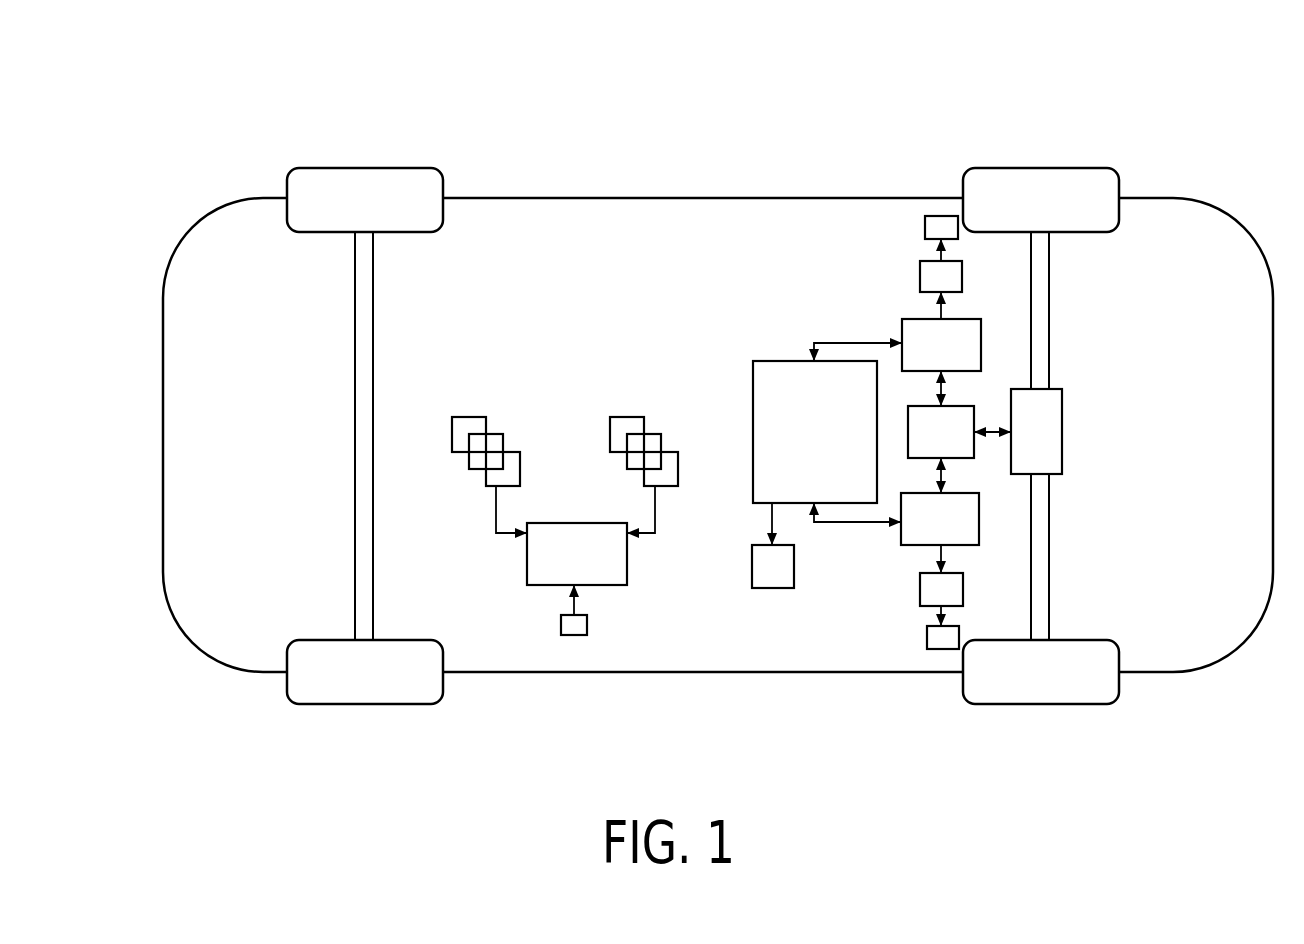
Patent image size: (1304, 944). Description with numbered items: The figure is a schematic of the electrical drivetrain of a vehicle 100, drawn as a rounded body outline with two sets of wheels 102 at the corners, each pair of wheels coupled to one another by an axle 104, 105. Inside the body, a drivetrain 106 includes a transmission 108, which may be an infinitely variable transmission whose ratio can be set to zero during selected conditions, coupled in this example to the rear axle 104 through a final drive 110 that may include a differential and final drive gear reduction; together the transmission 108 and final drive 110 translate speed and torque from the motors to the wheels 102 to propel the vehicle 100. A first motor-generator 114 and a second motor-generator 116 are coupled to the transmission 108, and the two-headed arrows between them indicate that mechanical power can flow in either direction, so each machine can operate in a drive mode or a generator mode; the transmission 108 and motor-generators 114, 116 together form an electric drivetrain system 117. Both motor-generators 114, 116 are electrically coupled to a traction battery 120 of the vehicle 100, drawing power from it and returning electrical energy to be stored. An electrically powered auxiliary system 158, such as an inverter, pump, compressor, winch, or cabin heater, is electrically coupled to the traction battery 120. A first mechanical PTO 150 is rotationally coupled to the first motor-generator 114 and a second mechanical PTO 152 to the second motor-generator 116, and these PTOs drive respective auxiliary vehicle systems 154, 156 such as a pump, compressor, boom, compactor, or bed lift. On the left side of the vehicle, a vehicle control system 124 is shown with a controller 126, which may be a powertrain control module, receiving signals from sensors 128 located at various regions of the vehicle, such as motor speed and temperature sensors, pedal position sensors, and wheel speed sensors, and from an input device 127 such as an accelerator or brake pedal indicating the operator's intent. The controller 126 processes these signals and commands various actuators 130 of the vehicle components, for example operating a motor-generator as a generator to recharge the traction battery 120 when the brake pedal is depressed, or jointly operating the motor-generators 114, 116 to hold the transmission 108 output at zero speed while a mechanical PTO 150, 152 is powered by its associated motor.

The vehicle 100 is at (1197, 76).
The wheels 102 is at (703, 436).
The axle 104 is at (1031, 312).
The axle 105 is at (355, 320).
The drivetrain 106 is at (786, 329).
The transmission 108 is at (941, 449).
The final drive 110 is at (1018, 431).
The first motor-generator 114 is at (941, 349).
The second motor-generator 116 is at (940, 532).
The electric drivetrain system 117 is at (870, 311).
The traction battery 120 is at (827, 443).
The vehicle control system 124 is at (420, 372).
The controller 126 is at (577, 554).
The input device 127 is at (588, 624).
The sensors 128 is at (442, 415).
The actuators 130 is at (593, 415).
The first mechanical PTO 150 is at (920, 286).
The second mechanical PTO 152 is at (920, 600).
The auxiliary vehicle system 154 is at (925, 228).
The auxiliary vehicle system 156 is at (927, 639).
The electrically powered auxiliary system 158 is at (795, 572).